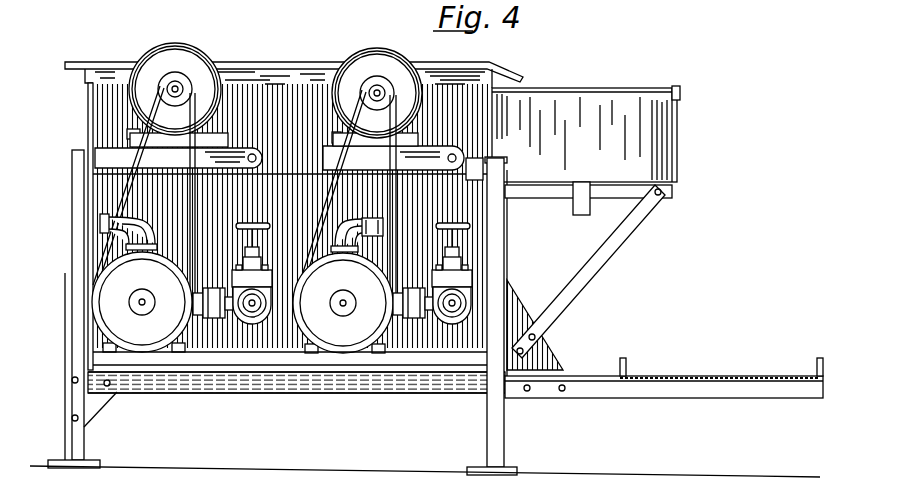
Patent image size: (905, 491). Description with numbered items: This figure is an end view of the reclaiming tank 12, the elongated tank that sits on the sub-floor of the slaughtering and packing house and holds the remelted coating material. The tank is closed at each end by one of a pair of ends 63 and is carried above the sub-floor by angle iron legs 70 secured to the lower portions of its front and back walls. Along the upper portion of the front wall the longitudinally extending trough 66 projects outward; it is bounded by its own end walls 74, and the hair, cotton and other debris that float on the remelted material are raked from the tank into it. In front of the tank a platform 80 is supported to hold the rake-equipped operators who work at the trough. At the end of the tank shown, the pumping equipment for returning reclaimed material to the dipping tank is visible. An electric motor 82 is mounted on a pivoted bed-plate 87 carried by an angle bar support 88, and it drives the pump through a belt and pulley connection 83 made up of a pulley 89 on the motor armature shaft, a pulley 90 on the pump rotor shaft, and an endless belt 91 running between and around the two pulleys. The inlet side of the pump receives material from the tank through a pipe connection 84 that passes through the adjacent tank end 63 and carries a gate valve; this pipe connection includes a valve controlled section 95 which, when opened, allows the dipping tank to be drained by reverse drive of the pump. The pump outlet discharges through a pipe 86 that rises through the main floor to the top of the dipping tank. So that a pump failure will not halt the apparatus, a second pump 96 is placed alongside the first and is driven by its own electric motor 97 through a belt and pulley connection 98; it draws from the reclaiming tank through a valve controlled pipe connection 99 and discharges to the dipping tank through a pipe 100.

The reclaiming tank 12 is at (451, 61).
The ends 63 is at (251, 99).
The trough 66 is at (660, 124).
The angle iron legs 70 is at (496, 430).
The end walls 74 is at (654, 153).
The platform 80 is at (702, 374).
The electric motor 82 is at (359, 49).
The belt and pulley connection 83 is at (346, 108).
The pipe connection 84 is at (425, 318).
The pipe 86 is at (370, 226).
The pivoted bed-plate 87 is at (434, 147).
The angle bar support 88 is at (474, 158).
The pulley 89 is at (373, 80).
The pulley 90 is at (350, 340).
The endless belt 91 is at (396, 198).
The valve controlled section 95 is at (463, 322).
The second pump 96 is at (174, 350).
The electric motor 97 is at (174, 50).
The belt and pulley connection 98 is at (147, 97).
The valve controlled pipe connection 99 is at (230, 314).
The pipe 100 is at (108, 224).